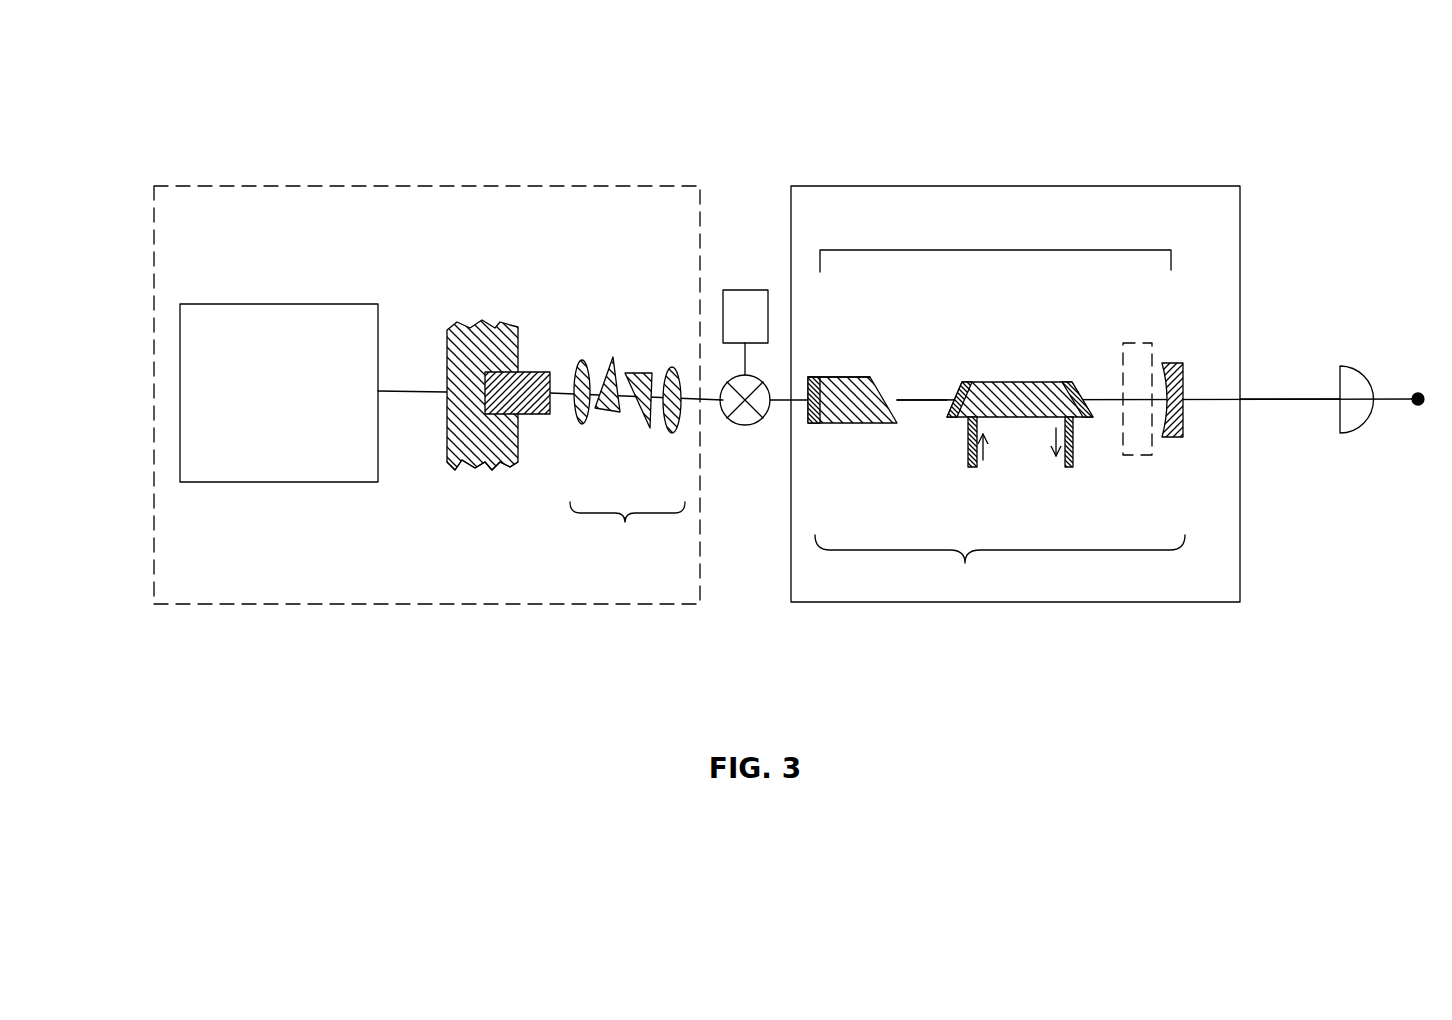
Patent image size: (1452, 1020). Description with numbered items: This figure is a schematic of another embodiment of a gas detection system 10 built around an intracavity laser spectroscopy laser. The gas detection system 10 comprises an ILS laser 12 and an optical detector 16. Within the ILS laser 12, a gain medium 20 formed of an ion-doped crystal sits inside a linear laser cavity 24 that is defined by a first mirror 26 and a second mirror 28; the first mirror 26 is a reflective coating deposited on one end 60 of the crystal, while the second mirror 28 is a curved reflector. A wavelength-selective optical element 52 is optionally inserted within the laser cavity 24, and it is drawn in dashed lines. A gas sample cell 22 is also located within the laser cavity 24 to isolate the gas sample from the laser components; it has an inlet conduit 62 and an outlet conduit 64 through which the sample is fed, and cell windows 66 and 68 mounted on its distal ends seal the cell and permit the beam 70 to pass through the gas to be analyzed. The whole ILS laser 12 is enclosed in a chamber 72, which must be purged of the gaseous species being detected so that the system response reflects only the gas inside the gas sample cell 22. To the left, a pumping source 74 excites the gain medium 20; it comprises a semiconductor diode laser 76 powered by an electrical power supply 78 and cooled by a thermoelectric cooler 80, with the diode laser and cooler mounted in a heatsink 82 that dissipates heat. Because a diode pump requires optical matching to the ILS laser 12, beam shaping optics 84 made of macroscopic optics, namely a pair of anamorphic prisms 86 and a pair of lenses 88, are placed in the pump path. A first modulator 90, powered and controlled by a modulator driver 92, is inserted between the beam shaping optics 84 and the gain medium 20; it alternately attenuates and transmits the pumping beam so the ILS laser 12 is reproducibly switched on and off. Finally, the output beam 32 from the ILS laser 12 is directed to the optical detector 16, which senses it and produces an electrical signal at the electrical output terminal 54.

The gas detection system 10 is at (1100, 143).
The ILS laser 12 is at (1000, 568).
The optical detector 16 is at (1362, 412).
The gain medium 20 is at (862, 420).
The gas sample cell 22 is at (962, 417).
The laser cavity 24 is at (960, 250).
The first mirror 26 is at (812, 423).
The second mirror 28 is at (1183, 380).
The output beam 32 is at (1265, 399).
The wavelength-selective optical element 52 is at (1140, 455).
The electrical output terminal 54 is at (1418, 394).
The end of the ion-doped crystal 60 is at (842, 377).
The inlet conduit 62 is at (968, 462).
The outlet conduit 64 is at (1062, 462).
The cell window 66 is at (955, 385).
The cell window 68 is at (1075, 382).
The beam 70 is at (902, 399).
The chamber 72 is at (1040, 602).
The pumping source 74 is at (478, 604).
The semiconductor diode laser 76 is at (537, 372).
The electrical power supply 78 is at (313, 472).
The thermoelectric cooler 80 is at (480, 378).
The heatsink 82 is at (452, 462).
The beam shaping optics 84 is at (627, 535).
The pair of anamorphic prisms 86 is at (637, 373).
The pair of lenses 88 is at (673, 432).
The first modulator 90 is at (745, 425).
The modulator driver 92 is at (748, 290).